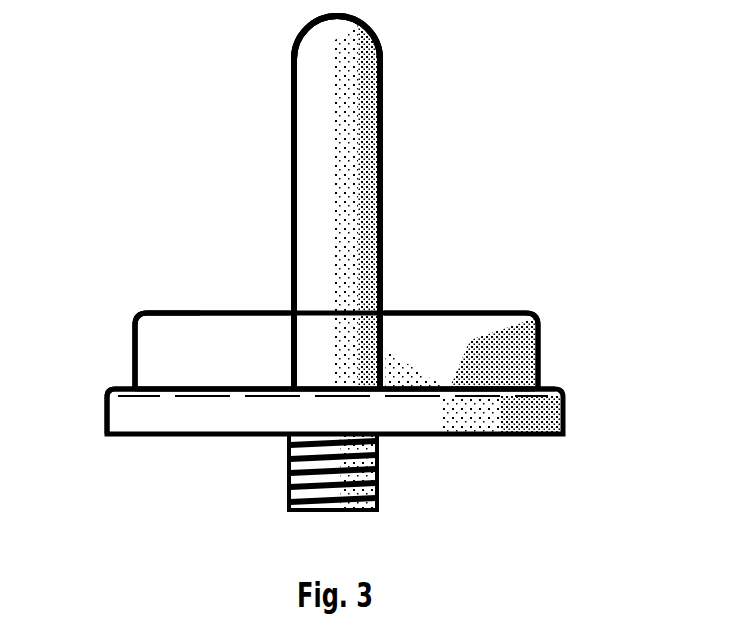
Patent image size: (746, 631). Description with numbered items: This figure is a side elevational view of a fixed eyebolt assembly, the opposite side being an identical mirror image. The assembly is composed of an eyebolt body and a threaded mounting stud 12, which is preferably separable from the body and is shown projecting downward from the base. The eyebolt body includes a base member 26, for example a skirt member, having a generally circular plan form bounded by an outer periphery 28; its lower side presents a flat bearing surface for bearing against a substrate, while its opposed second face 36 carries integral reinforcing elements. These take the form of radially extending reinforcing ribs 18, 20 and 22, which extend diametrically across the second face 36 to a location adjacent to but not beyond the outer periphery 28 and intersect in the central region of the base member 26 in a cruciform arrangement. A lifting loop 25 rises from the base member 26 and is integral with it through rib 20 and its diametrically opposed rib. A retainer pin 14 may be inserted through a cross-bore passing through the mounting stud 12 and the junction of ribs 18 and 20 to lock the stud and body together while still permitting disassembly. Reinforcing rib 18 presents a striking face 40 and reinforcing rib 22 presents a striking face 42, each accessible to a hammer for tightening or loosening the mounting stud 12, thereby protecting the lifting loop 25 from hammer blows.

The mounting stud 12 is at (290, 462).
The retainer pin 14 is at (384, 352).
The reinforcing rib 18 is at (496, 312).
The reinforcing rib 20 is at (317, 338).
The reinforcing rib 22 is at (182, 312).
The lifting loop 25 is at (318, 50).
The base member 26 is at (576, 391).
The outer periphery 28 is at (105, 417).
The second face 36 is at (176, 388).
The striking face 40 is at (473, 347).
The striking face 42 is at (168, 335).